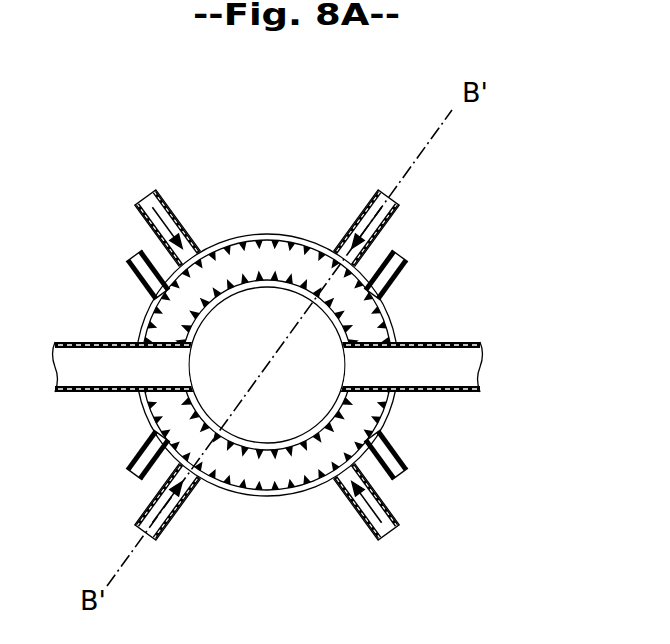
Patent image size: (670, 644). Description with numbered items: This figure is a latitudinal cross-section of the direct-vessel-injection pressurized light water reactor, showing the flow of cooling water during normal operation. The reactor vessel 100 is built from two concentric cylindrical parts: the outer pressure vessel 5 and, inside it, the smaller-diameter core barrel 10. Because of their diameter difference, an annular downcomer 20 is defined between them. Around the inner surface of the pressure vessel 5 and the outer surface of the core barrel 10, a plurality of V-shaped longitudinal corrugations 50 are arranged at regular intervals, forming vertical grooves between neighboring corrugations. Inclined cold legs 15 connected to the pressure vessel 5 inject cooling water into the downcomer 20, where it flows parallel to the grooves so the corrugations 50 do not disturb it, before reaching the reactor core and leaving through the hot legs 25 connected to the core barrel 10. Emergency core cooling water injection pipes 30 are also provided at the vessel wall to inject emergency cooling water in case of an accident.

The reactor vessel 100 is at (267, 316).
The pressure vessel 5 is at (265, 235).
The core barrel 10 is at (293, 283).
The downcomer 20 is at (273, 477).
The hot leg 25 is at (458, 342).
The longitudinal corrugation 50 is at (140, 332).
The cold leg 15 is at (173, 523).
The emergency core cooling water injection pipe 30 is at (398, 262).